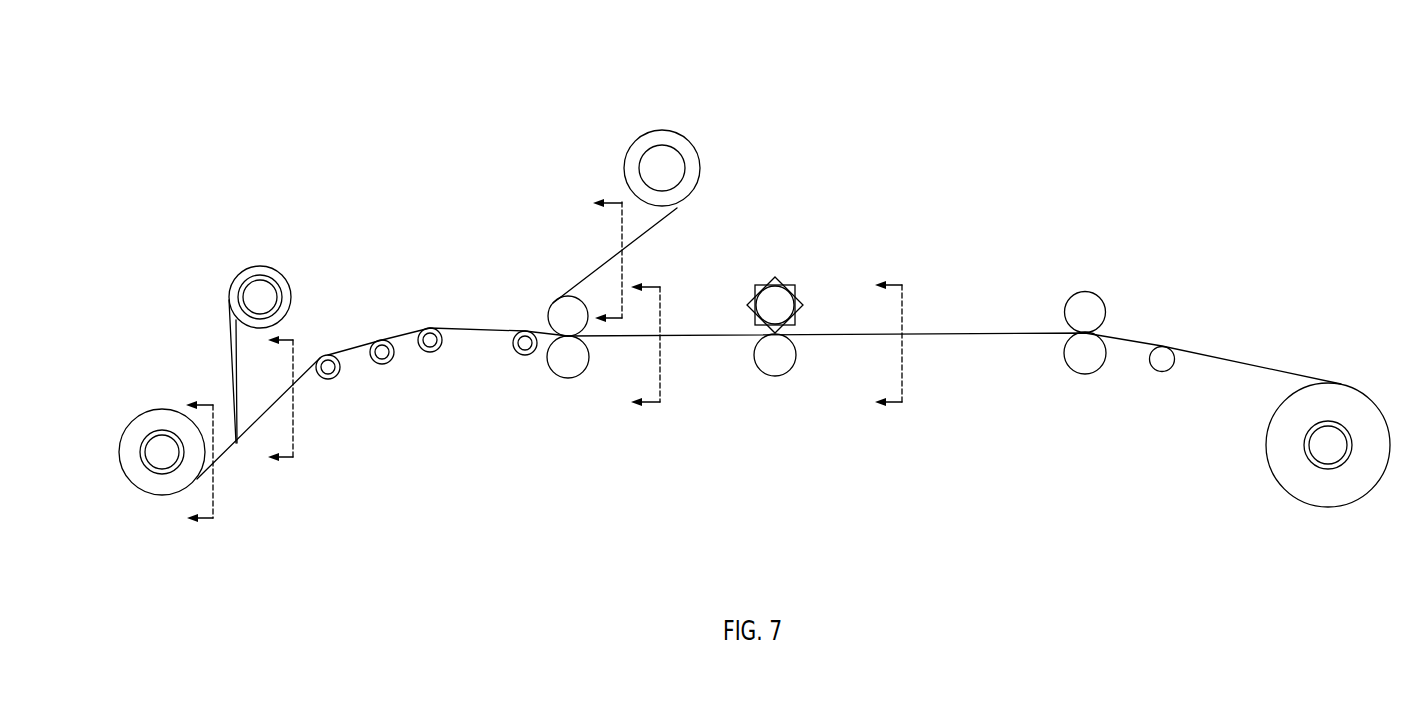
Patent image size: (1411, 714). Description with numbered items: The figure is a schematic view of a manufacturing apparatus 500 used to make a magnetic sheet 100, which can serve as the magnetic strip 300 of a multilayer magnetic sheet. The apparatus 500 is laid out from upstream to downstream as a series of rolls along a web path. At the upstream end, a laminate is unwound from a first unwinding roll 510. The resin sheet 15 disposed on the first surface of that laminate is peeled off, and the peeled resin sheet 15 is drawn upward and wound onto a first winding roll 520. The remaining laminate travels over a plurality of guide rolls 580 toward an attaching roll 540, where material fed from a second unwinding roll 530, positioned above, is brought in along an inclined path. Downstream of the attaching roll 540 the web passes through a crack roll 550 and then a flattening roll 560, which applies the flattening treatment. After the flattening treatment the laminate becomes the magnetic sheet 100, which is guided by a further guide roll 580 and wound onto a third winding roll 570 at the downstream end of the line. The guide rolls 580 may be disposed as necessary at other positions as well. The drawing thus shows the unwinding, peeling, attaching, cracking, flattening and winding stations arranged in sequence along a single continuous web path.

The resin sheet 15 is at (228, 340).
The magnetic sheet 100 is at (1226, 348).
The magnetic strip 300 is at (660, 221).
The manufacturing apparatus 500 is at (1072, 172).
The first unwinding roll 510 is at (143, 412).
The first winding roll 520 is at (257, 266).
The second unwinding roll 530 is at (658, 130).
The attaching roll 540 is at (565, 398).
The crack roll 550 is at (774, 398).
The flattening roll 560 is at (1084, 398).
The third winding roll 570 is at (1311, 508).
The guide roll 580 is at (327, 380).